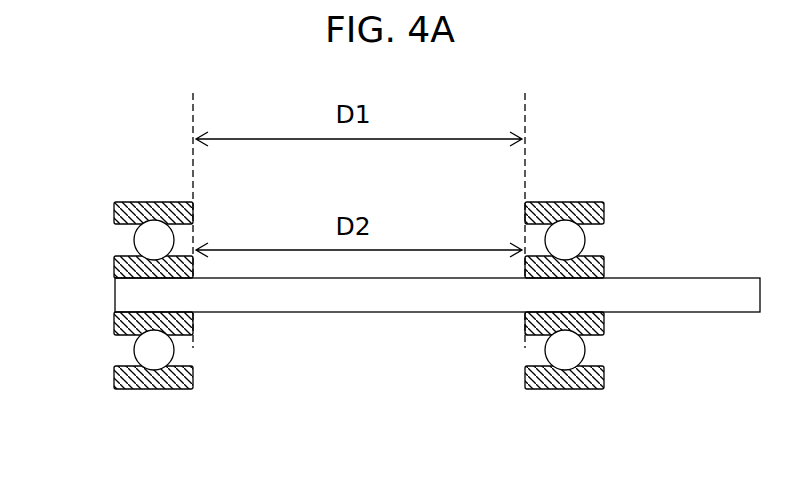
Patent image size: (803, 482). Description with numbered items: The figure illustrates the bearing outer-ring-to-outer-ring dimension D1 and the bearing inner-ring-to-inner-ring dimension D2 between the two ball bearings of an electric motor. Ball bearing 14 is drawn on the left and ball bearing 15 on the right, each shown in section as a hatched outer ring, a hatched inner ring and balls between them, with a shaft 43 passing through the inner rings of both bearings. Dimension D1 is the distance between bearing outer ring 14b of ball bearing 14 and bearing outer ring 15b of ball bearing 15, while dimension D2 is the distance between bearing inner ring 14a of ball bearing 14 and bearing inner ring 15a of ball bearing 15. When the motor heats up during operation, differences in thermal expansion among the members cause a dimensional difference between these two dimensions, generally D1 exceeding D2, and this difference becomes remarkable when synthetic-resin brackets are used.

The ball bearing 14 is at (107, 301).
The bearing inner ring 14a is at (115, 260).
The bearing outer ring 14b is at (115, 204).
The ball bearing 15 is at (622, 309).
The bearing inner ring 15a is at (604, 263).
The bearing outer ring 15b is at (604, 209).
The shaft 43 is at (630, 293).